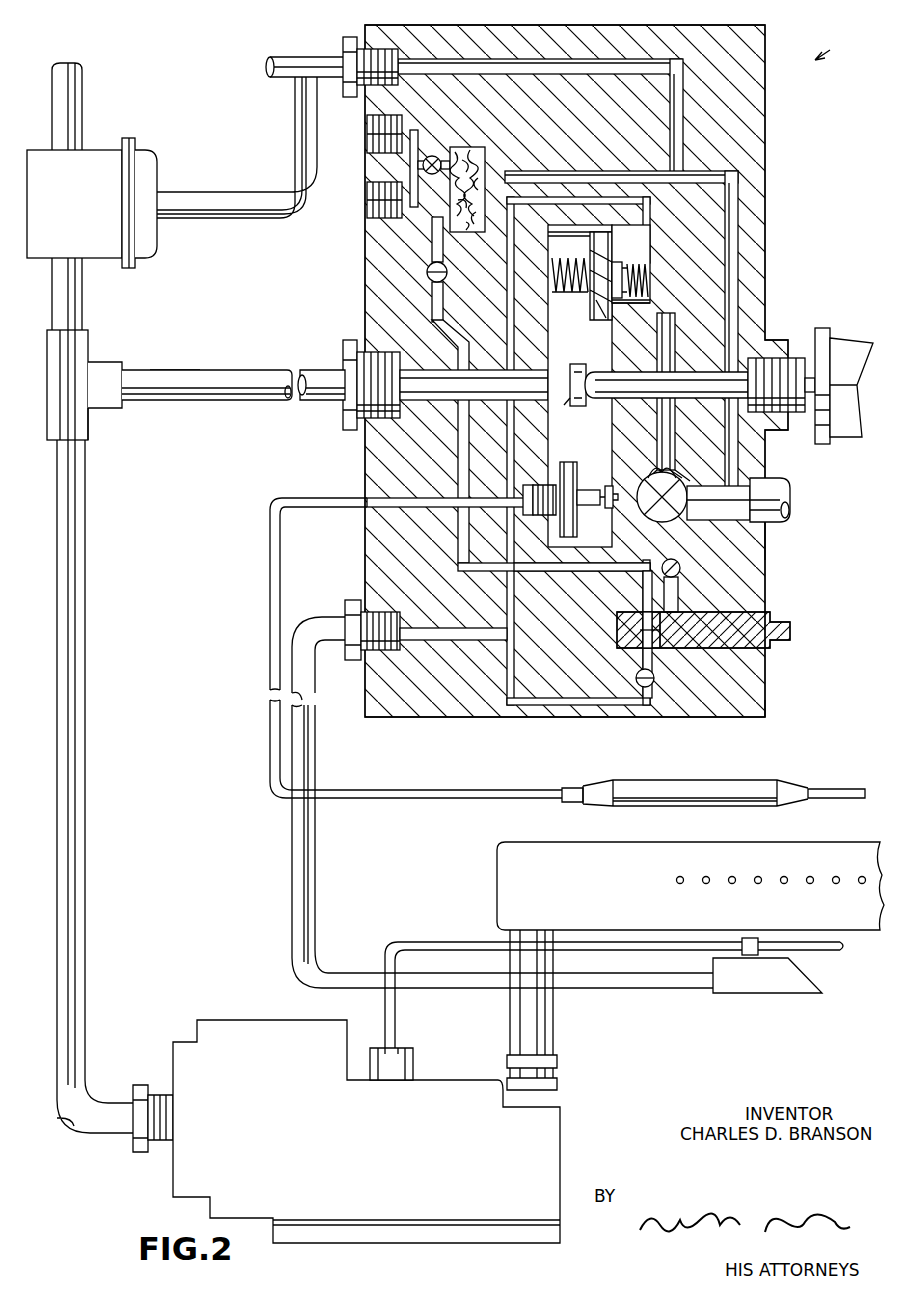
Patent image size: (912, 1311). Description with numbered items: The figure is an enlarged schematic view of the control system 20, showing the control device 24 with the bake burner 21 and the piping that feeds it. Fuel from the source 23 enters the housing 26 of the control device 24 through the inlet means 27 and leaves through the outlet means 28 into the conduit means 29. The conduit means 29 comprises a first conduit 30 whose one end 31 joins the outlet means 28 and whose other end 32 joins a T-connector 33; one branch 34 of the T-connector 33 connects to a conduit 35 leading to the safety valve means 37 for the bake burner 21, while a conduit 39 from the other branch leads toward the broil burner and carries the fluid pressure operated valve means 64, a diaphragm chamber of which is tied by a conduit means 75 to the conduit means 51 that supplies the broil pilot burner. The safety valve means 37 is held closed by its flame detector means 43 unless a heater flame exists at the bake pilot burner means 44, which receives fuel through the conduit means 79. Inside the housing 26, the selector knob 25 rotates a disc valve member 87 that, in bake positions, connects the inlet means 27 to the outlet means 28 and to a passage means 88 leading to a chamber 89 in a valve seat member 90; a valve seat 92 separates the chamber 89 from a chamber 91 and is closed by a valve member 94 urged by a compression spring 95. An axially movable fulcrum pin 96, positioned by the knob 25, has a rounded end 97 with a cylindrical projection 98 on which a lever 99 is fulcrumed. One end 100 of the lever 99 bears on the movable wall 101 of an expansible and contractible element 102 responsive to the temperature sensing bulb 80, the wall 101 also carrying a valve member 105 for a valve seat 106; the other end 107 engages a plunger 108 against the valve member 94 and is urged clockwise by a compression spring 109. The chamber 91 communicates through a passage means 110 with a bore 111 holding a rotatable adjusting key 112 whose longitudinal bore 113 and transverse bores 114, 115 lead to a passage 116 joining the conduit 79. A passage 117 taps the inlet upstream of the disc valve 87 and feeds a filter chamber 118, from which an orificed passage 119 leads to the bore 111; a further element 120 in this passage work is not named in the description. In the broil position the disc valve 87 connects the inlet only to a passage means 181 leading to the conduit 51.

The control system 20 is at (832, 48).
The bake burner 21 is at (828, 848).
The source of fuel 23 is at (792, 495).
The control device 24 is at (778, 139).
The selector means 25 is at (842, 340).
The housing 26 is at (772, 708).
The inlet means 27 is at (766, 540).
The outlet means 28 is at (436, 365).
The conduit means 29 is at (214, 362).
The first conduit 30 is at (164, 368).
The one end 31 is at (328, 366).
The other end 32 is at (132, 406).
The T-connector 33 is at (98, 348).
The branch 34 is at (92, 438).
The conduit 35 is at (84, 594).
The safety valve means 37 is at (237, 1005).
The conduit 39 is at (84, 80).
The flame detector means 43 is at (842, 946).
The bake pilot burner means 44 is at (800, 982).
The conduit means 51 is at (330, 55).
The fluid pressure operated valve means 64 is at (160, 146).
The conduit means 75 is at (240, 190).
The conduit means 79 is at (318, 872).
The temperature sensing bulb 80 is at (696, 778).
The disc valve member 87 is at (676, 468).
The passage means 88 is at (652, 408).
The chamber 89 is at (606, 240).
The valve seat member 90 is at (596, 302).
The chamber 91 is at (640, 262).
The valve seat 92 is at (652, 296).
The valve member 94 is at (630, 272).
The compression spring 95 is at (640, 286).
The fulcrum pin 96 is at (698, 376).
The rounded end 97 is at (576, 408).
The cylindrical projection 98 is at (576, 352).
The lever 99 is at (590, 437).
The end of lever 100 is at (606, 484).
The movable wall 101 is at (576, 528).
The expansible and contractible element 102 is at (558, 532).
The valve member 105 is at (682, 562).
The valve seat 106 is at (650, 518).
The other end of lever 107 is at (586, 228).
The plunger 108 is at (582, 256).
The compression spring 109 is at (554, 296).
The passage means 110 is at (507, 250).
The bore 111 is at (712, 614).
The adjusting key 112 is at (748, 612).
The longitudinal bore 113 is at (642, 638).
The transverse bore 114 is at (688, 646).
The transverse bore 115 is at (612, 618).
The passage 116 is at (484, 627).
The passage 117 is at (740, 220).
The filter chamber 118 is at (480, 156).
The passage 119 is at (456, 446).
The check valve 120 is at (427, 278).
The passage means 181 is at (684, 130).